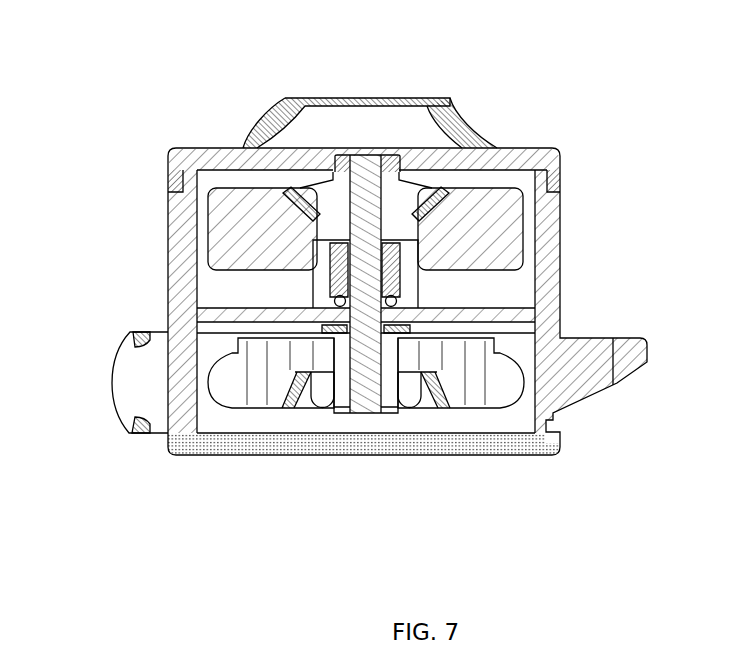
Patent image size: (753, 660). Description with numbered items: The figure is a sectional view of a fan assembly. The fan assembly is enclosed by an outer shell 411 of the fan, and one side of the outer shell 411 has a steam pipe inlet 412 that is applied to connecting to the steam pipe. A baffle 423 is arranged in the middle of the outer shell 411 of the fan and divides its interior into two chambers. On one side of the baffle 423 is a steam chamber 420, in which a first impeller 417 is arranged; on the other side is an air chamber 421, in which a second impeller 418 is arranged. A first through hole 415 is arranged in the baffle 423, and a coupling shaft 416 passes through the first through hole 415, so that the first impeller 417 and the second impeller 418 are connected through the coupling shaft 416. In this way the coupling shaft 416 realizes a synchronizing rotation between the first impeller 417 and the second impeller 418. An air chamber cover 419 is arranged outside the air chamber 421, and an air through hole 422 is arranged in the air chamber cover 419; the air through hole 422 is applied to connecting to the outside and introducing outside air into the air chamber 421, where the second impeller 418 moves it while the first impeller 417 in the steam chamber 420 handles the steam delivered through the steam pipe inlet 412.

The outer shell of the fan 411 is at (537, 313).
The steam pipe inlet 412 is at (135, 400).
The first through hole 415 is at (348, 335).
The coupling shaft 416 is at (366, 176).
The first impeller 417 is at (493, 387).
The second impeller 418 is at (498, 213).
The air chamber cover 419 is at (233, 170).
The steam chamber 420 is at (441, 420).
The air chamber 421 is at (504, 289).
The air through hole 422 is at (357, 113).
The baffle 423 is at (230, 313).